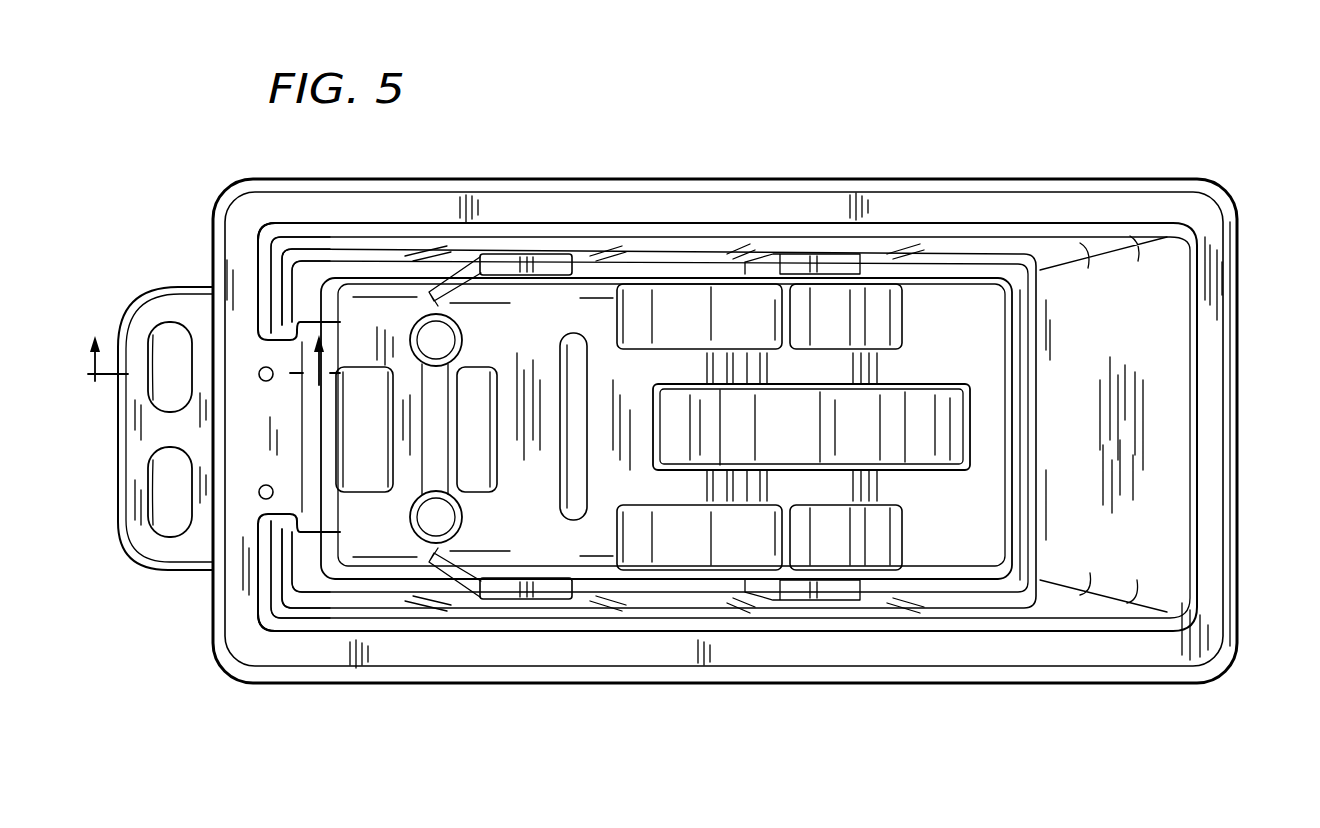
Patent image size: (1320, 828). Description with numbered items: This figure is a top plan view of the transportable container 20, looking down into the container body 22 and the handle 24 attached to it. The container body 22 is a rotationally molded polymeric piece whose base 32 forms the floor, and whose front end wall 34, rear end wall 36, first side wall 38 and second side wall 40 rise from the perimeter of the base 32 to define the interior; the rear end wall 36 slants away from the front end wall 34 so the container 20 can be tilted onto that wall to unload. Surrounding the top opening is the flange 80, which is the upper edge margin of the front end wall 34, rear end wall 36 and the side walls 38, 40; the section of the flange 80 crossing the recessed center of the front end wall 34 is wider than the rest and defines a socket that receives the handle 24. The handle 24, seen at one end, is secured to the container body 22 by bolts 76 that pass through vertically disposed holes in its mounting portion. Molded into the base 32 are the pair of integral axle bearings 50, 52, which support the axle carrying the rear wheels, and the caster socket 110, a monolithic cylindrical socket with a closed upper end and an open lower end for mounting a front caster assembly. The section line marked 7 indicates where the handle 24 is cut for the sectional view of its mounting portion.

The transportable container 20 is at (1176, 146).
The container body 22 is at (868, 178).
The handle 24 is at (140, 570).
The base 32 is at (633, 377).
The front end wall 34 is at (292, 295).
The rear end wall 36 is at (1160, 323).
The first side wall 38 is at (662, 610).
The second side wall 40 is at (590, 257).
The axle bearing 50 is at (743, 538).
The axle bearing 52 is at (743, 317).
The bolt 76 is at (259, 371).
The flange 80 is at (1005, 205).
The caster socket 110 is at (436, 337).
The section line 7- 7 is at (206, 375).